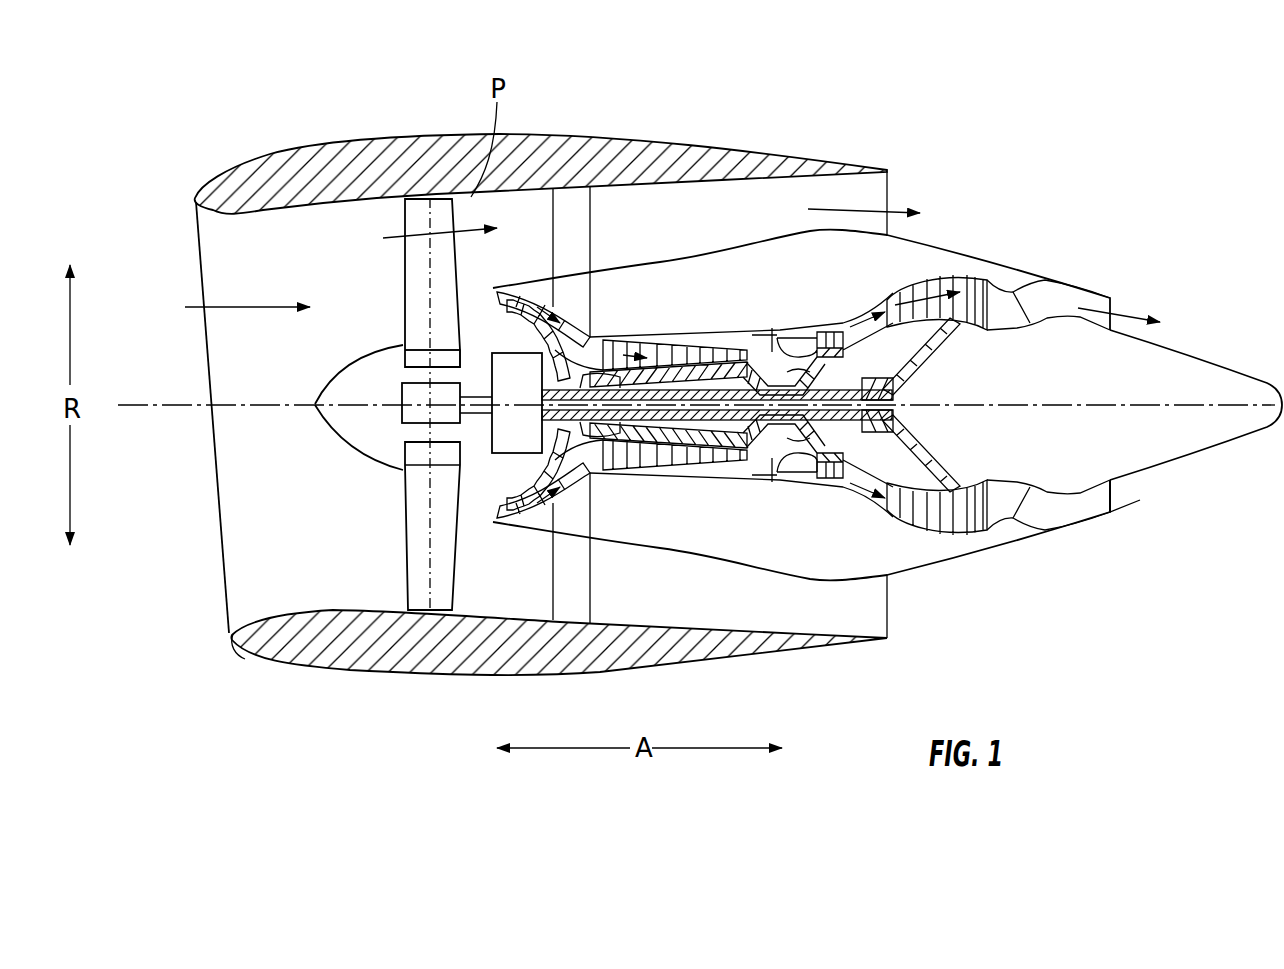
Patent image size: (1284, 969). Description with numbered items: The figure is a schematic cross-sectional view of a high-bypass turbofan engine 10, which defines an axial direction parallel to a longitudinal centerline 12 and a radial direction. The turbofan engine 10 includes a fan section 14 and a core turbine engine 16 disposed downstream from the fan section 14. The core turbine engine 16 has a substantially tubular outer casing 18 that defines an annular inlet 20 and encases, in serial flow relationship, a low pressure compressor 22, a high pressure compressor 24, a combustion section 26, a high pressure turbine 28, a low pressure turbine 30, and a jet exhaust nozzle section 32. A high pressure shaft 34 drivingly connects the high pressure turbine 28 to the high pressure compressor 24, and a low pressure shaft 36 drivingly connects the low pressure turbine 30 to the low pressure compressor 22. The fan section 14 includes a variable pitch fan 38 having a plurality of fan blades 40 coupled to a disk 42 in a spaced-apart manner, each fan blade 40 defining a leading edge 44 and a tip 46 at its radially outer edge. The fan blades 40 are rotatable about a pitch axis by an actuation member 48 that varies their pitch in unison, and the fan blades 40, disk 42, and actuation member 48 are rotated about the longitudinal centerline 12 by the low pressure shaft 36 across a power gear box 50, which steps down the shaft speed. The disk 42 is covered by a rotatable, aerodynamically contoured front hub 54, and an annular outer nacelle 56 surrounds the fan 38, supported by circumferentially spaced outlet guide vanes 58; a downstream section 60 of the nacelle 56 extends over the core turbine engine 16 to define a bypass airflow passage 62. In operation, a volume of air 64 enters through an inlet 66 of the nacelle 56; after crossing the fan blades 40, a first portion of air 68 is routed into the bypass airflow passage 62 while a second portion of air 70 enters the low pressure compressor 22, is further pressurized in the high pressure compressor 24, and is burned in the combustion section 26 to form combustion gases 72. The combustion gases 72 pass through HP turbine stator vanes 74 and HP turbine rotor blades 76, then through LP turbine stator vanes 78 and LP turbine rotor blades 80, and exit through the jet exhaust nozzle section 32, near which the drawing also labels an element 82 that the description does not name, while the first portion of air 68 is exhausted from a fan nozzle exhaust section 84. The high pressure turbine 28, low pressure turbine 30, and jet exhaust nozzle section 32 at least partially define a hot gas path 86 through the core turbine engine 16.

The turbofan engine 10 is at (1030, 153).
The longitudinal centerline 12 is at (1055, 402).
The fan section 14 is at (443, 100).
The core turbine engine 16 is at (758, 298).
The outer casing 18 is at (748, 553).
The annular inlet 20 is at (493, 523).
The low pressure compressor 22 is at (557, 463).
The high pressure compressor 24 is at (623, 458).
The combustion section 26 is at (790, 479).
The high pressure turbine 28 is at (920, 477).
The low pressure turbine 30 is at (970, 538).
The jet exhaust nozzle section 32 is at (1031, 513).
The high pressure shaft 34 is at (805, 370).
The low pressure shaft 36 is at (924, 364).
The variable pitch fan 38 is at (372, 462).
The fan blades 40 is at (403, 553).
The disk 42 is at (425, 360).
The leading edge 44 is at (403, 298).
The tip 46 is at (423, 198).
The actuation member 48 is at (403, 389).
The power gear box 50 is at (578, 345).
The front hub 54 is at (328, 418).
The outer nacelle 56 is at (450, 673).
The outlet guide vanes 58 is at (592, 218).
The downstream section 60 is at (813, 153).
The bypass airflow passage 62 is at (817, 208).
The volume of air 64 is at (248, 305).
The inlet 66 is at (227, 620).
The first portion of air 68 is at (415, 221).
The second portion of air 70 is at (493, 290).
The combustion gases 72 is at (843, 333).
The HP turbine stator vanes 74 is at (808, 478).
The HP turbine rotor blades 76 is at (897, 432).
The LP turbine stator vanes 78 is at (893, 513).
The LP turbine rotor blades 80 is at (903, 527).
The exhaust nozzle exit 82 is at (1112, 495).
The fan nozzle exhaust section 84 is at (877, 197).
The hot gas path 86 is at (875, 304).